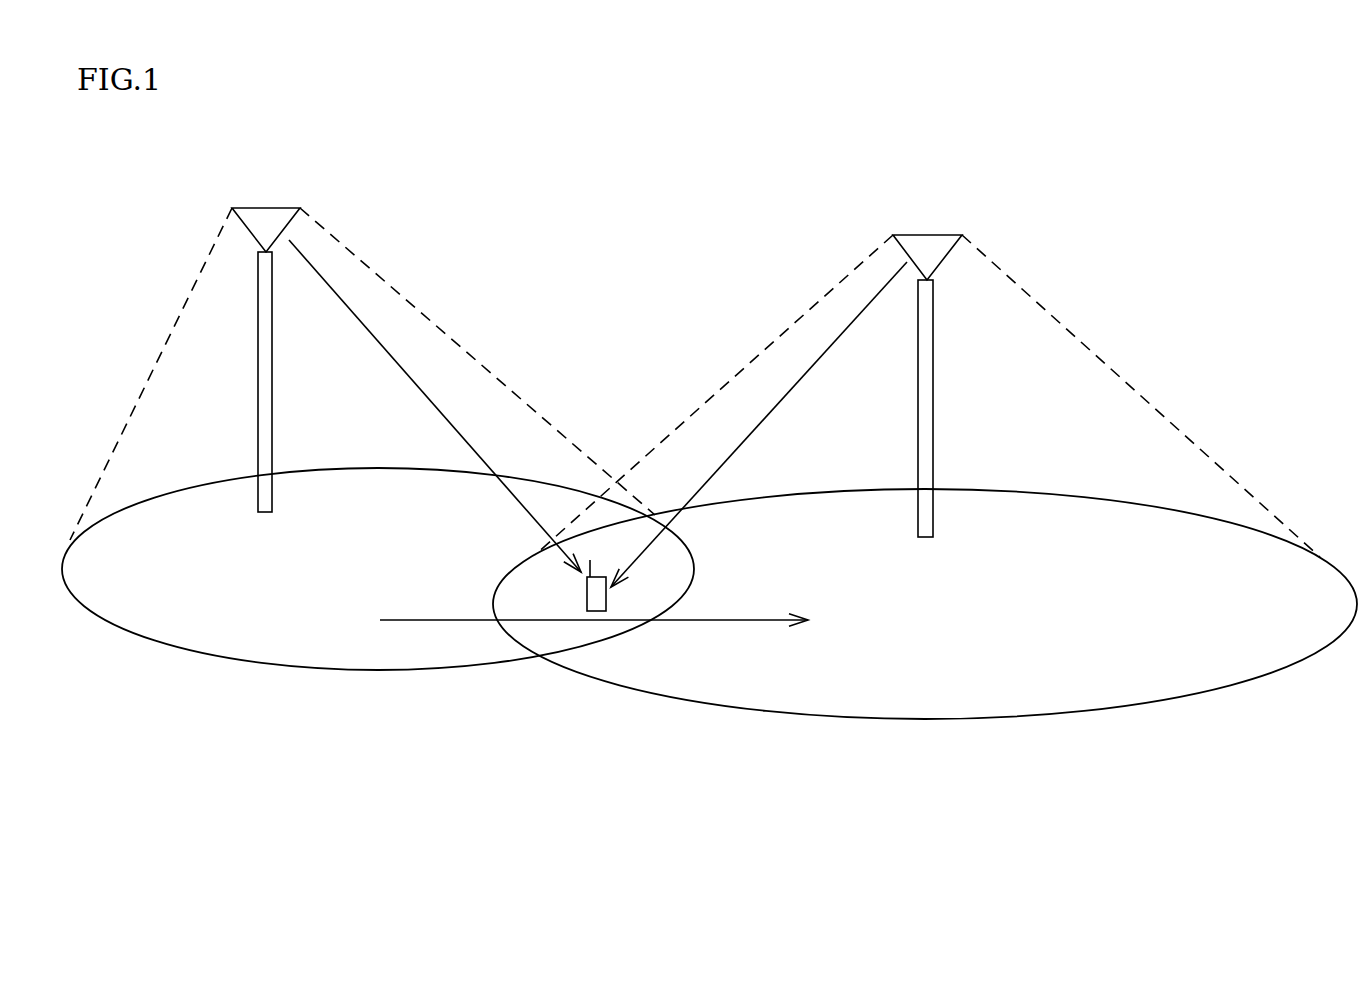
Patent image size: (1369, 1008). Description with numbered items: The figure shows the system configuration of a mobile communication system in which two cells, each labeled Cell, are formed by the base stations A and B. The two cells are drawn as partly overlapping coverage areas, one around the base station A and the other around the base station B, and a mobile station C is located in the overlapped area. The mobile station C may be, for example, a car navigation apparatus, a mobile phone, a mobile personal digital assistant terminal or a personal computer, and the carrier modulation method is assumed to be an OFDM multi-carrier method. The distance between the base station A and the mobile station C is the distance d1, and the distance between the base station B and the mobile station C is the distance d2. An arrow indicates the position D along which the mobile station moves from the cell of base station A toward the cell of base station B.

The base station A is at (258, 334).
The base station B is at (933, 318).
The mobile station C is at (575, 586).
The position D is at (608, 622).
The distance d1 is at (435, 406).
The distance d2 is at (759, 424).
The cell Cell is at (230, 659).